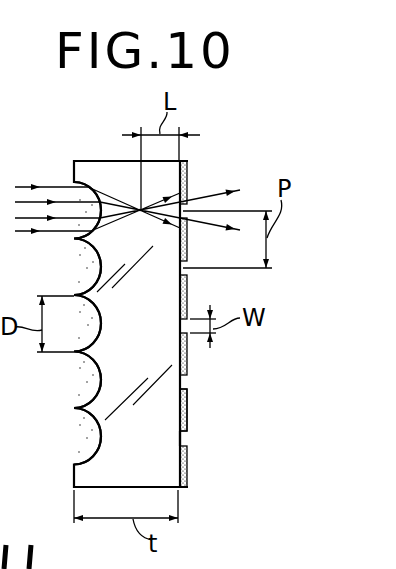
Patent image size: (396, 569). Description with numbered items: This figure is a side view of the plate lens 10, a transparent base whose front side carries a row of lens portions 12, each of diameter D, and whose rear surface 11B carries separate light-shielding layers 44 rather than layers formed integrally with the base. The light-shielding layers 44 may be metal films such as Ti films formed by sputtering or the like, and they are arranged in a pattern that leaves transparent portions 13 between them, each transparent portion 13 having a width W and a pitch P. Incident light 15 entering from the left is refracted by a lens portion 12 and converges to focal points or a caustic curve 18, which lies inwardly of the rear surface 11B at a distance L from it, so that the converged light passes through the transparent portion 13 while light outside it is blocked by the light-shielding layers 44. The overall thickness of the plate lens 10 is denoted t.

The plate lens 10 is at (216, 179).
The rear surface of the transparent base 11B is at (181, 438).
The lens portion 12 is at (82, 394).
The transparent portion 13 is at (183, 387).
The incident light 15 is at (22, 232).
The focal points or caustic curve 18 is at (140, 213).
The light-shielding layers 44 is at (188, 411).